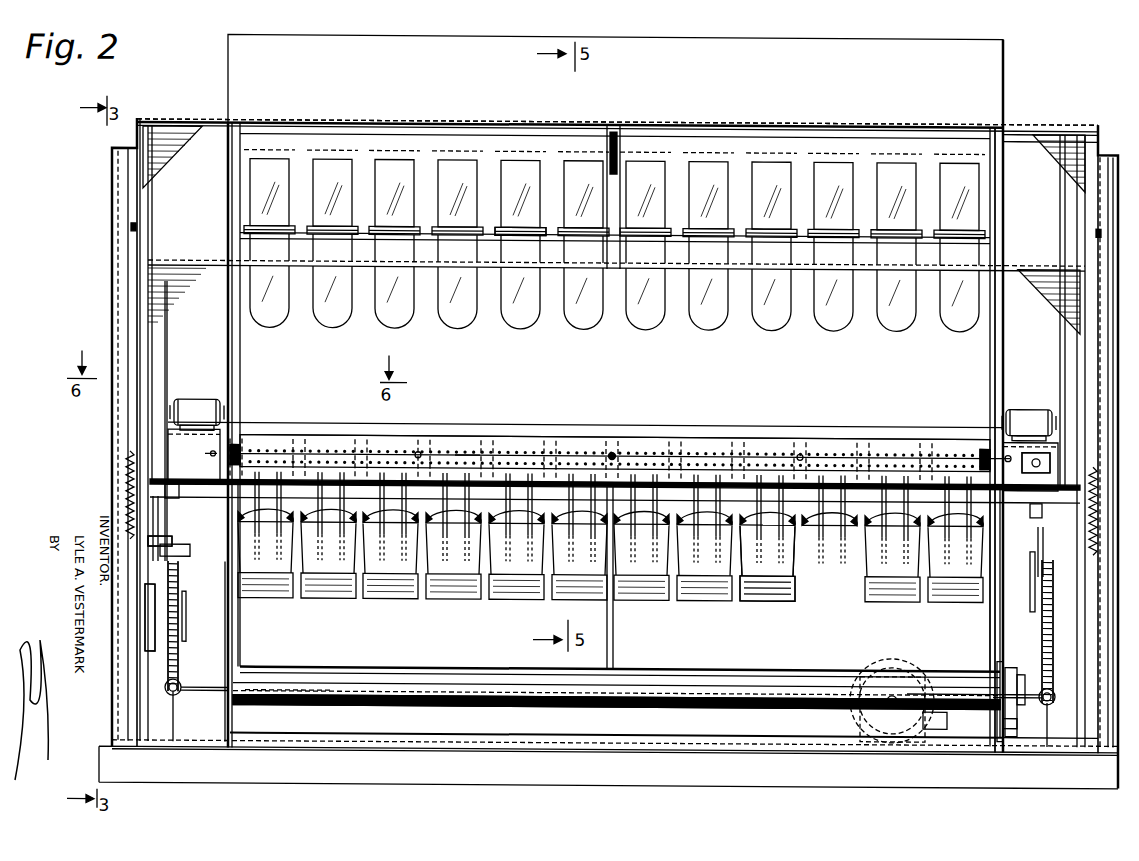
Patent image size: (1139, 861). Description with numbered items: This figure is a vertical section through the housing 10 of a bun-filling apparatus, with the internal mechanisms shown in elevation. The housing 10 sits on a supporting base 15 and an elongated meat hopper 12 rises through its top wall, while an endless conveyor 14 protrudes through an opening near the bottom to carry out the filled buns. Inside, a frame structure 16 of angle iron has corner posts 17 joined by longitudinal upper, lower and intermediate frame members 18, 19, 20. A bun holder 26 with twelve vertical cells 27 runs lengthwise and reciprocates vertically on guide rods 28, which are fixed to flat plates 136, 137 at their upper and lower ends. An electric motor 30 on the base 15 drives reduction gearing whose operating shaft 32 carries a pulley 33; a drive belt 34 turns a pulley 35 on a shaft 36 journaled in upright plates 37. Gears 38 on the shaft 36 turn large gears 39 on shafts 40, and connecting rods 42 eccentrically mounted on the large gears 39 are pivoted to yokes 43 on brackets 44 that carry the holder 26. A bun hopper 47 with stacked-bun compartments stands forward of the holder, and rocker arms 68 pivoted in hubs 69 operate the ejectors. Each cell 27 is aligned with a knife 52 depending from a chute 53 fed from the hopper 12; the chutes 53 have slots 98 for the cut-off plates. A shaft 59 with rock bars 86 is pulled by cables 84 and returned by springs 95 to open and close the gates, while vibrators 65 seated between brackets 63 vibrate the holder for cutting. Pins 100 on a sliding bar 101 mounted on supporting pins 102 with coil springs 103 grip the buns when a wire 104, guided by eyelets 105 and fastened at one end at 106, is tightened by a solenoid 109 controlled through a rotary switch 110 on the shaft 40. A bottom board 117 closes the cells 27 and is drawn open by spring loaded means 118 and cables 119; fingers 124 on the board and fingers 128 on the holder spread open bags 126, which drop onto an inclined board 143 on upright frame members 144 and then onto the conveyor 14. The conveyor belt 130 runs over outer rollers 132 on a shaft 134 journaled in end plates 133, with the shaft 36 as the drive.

The housing 10 is at (108, 256).
The hopper 12 is at (230, 84).
The endless conveyor 14 is at (608, 703).
The supporting base 15 is at (472, 773).
The frame structure 16 is at (713, 744).
The corner posts 17 is at (148, 197).
The upper frame member 18 is at (1058, 128).
The lower frame member 19 is at (1025, 743).
The intermediate frame member 20 is at (352, 322).
The holder 26 is at (700, 440).
The cells 27 is at (415, 437).
The guide rods 28 is at (160, 436).
The electric motor 30 is at (850, 702).
The operating shaft 32 is at (930, 714).
The pulley 33 is at (1010, 718).
The drive belt 34 is at (1000, 663).
The pulley 35 is at (1010, 673).
The shaft 36 is at (205, 690).
The upright plates 37 is at (1063, 658).
The gears 38 is at (1048, 698).
The large gears 39 is at (1045, 613).
The shafts 40 is at (148, 601).
The connecting rods 42 is at (1040, 551).
The yokes 43 is at (1035, 505).
The brackets 44 is at (1040, 563).
The hopper 47 is at (980, 369).
The knife 52 is at (885, 314).
The chutes 53 is at (835, 188).
The shaft 59 is at (548, 266).
The brackets 63 is at (1005, 438).
The electrically driven vibrators 65 is at (1025, 405).
The rocker arms 68 is at (190, 589).
The hubs 69 is at (178, 546).
The cables 84 is at (130, 419).
The rock bar 86 is at (1098, 226).
The springs 95 is at (130, 482).
The slots 98 is at (500, 234).
The pins 100 is at (525, 446).
The bar 101 is at (550, 451).
The supporting pins 102 is at (612, 451).
The coil springs 103 is at (800, 450).
The wire 104 is at (465, 452).
The eyelets 105 is at (975, 449).
The wire fastening 106 is at (210, 451).
The solenoid 109 is at (1035, 455).
The rotary switch 110 is at (108, 566).
The bottom board 117 is at (295, 533).
The spring loaded means 118 is at (1000, 558).
The cables 119 is at (1000, 328).
The fingers 124 is at (715, 585).
The bags 126 is at (865, 584).
The finger 128 is at (650, 591).
The endless belt 130 is at (430, 687).
The outer rollers 132 is at (260, 688).
The end plates 133 is at (985, 733).
The shaft 134 is at (290, 688).
The flat plates 136 is at (175, 261).
The flat plates 137 is at (152, 536).
The inclined board 143 is at (498, 660).
The upright frame members 144 is at (990, 621).